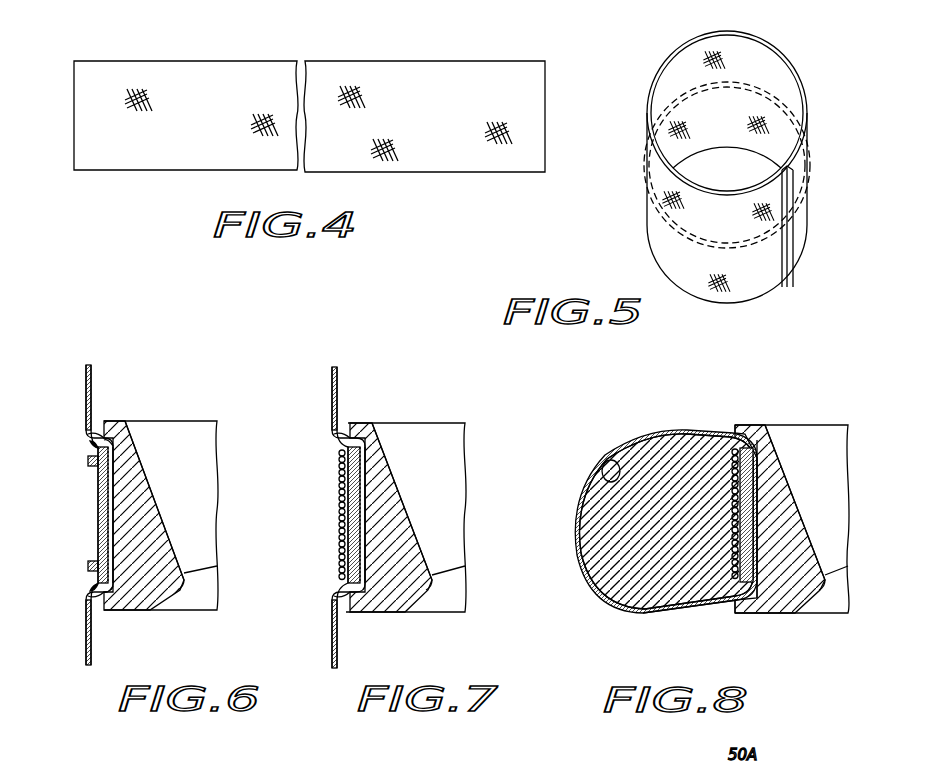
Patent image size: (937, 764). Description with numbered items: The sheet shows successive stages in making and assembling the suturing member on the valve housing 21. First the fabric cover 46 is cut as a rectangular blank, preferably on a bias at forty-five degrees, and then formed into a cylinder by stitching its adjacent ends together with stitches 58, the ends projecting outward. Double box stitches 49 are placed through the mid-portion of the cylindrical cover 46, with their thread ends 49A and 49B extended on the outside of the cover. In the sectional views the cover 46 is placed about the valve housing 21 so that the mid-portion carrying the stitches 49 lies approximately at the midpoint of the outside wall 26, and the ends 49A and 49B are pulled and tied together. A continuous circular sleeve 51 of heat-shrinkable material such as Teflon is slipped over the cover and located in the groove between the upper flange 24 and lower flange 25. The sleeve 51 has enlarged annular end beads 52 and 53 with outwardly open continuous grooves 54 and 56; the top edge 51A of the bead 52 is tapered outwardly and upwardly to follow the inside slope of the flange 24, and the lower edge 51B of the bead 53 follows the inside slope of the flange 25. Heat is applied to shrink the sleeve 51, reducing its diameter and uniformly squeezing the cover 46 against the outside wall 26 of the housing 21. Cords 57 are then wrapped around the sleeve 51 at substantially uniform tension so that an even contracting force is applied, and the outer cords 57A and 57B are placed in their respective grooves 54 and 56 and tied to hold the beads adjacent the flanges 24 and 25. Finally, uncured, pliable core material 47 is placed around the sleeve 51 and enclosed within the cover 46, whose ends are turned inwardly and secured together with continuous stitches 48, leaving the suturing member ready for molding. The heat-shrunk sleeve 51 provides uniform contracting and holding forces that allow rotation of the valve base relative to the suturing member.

In FIG. 6, the valve housing 21 is at (187, 491).
In FIG. 7, the valve housing 21 is at (417, 492).
In FIG. 8, the valve housing 21 is at (796, 488).
In FIG. 6, the flange 24 is at (95, 432).
In FIG. 7, the flange 24 is at (350, 428).
In FIG. 6, the flange 25 is at (98, 608).
In FIG. 7, the flange 25 is at (348, 608).
In FIG. 6, the outside wall 26 is at (118, 535).
In FIG. 7, the outside wall 26 is at (365, 535).
In FIG. 8, the outside wall 26 is at (760, 552).
In FIG. 4, the cover 46 is at (421, 87).
In FIG. 5, the cover 46 is at (697, 38).
In FIG. 6, the cover 46 is at (92, 386).
In FIG. 7, the cover 46 is at (338, 393).
In FIG. 8, the cover 46 is at (683, 430).
In FIG. 8, the core material 47 is at (638, 560).
In FIG. 8, the stitches 48 is at (608, 462).
In FIG. 5, the stitches 49 is at (693, 178).
In FIG. 6, the stitches 49 is at (115, 515).
In FIG. 7, the stitches 49 is at (363, 512).
In FIG. 8, the stitches 49 is at (763, 507).
In FIG. 5, the end 49A is at (647, 178).
In FIG. 5, the end 49B is at (647, 180).
In FIG. 6, the sleeve 51 is at (130, 512).
In FIG. 7, the sleeve 51 is at (338, 483).
In FIG. 8, the sleeve 51 is at (760, 605).
In FIG. 6, the top edge 51A is at (127, 417).
In FIG. 6, the lower edge 51B is at (112, 600).
In FIG. 6, the end bead 52 is at (92, 445).
In FIG. 6, the end bead 53 is at (102, 585).
In FIG. 6, the groove 54 is at (92, 453).
In FIG. 6, the groove 56 is at (92, 572).
In FIG. 7, the cords 57 is at (298, 506).
In FIG. 8, the cords 57 is at (742, 537).
In FIG. 7, the outer cord 57A is at (340, 455).
In FIG. 7, the outer cord 57B is at (340, 572).
In FIG. 5, the stitches 58 is at (782, 287).